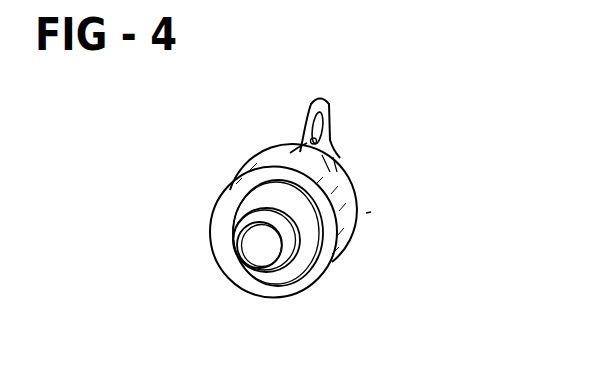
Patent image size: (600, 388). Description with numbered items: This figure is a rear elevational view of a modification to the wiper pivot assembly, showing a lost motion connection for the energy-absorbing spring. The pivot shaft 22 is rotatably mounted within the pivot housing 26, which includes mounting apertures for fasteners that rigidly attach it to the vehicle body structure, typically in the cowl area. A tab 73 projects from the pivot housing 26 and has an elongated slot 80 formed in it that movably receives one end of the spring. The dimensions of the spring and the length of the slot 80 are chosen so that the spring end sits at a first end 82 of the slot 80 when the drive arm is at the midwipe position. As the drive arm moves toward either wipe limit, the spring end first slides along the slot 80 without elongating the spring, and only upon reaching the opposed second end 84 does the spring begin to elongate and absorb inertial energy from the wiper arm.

The pivot shaft 22 is at (252, 255).
The pivot housing 26 is at (258, 153).
The tab 73 is at (331, 110).
The elongated slot 80 is at (332, 136).
The first end of the slot 82 is at (332, 146).
The second end of the slot 84 is at (305, 128).